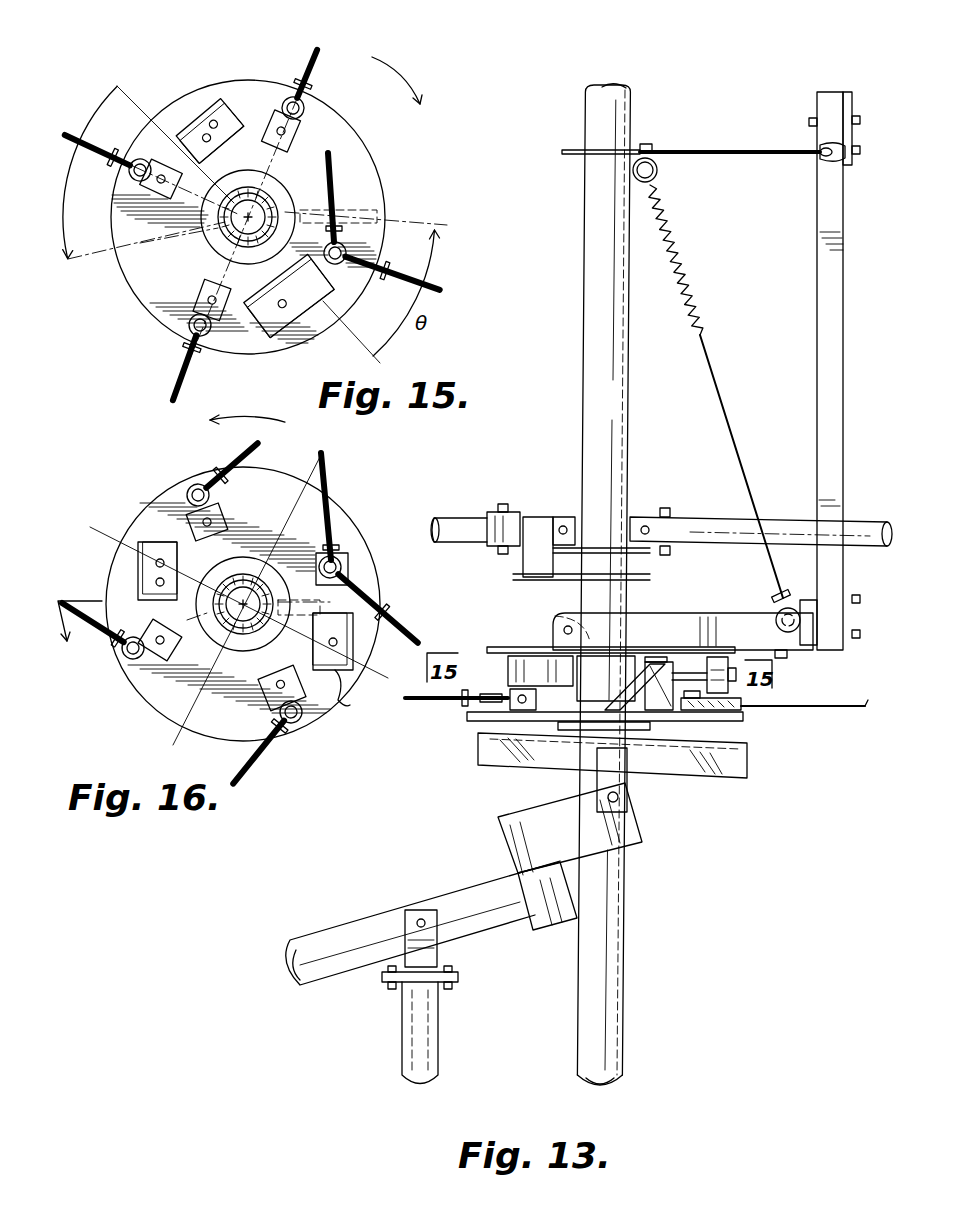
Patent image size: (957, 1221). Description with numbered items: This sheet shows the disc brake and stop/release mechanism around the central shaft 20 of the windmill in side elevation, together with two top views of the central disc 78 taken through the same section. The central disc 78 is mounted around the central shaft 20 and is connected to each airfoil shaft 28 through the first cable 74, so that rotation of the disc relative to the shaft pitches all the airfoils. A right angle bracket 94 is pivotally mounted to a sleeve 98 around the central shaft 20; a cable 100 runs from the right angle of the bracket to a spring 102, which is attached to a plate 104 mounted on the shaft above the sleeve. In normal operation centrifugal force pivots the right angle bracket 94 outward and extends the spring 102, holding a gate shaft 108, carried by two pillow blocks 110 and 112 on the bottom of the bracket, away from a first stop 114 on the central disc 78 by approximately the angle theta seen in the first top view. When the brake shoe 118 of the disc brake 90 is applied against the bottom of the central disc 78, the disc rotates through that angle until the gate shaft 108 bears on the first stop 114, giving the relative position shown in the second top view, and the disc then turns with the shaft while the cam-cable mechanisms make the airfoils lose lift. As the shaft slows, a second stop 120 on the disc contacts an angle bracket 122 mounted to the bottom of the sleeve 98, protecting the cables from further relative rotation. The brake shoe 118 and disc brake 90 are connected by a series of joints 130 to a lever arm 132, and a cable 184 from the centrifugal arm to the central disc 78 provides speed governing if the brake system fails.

In FIG. 15, the central shaft 20 is at (218, 237).
In FIG. 16, the central shaft 20 is at (243, 604).
In FIG. 13, the airfoil shaft 28 is at (455, 518).
In FIG. 15, the first cable 74 is at (312, 64).
In FIG. 16, the first cable 74 is at (250, 448).
In FIG. 13, the first cable 74 is at (435, 708).
In FIG. 15, the central disc 78 is at (355, 162).
In FIG. 16, the central disc 78 is at (352, 532).
In FIG. 13, the central disc 78 is at (740, 722).
In FIG. 13, the disc brake 90 is at (722, 780).
In FIG. 13, the right angle bracket 94 is at (842, 394).
In FIG. 13, the sleeve 98 is at (612, 605).
In FIG. 13, the cable 100 is at (732, 430).
In FIG. 13, the spring 102 is at (685, 266).
In FIG. 13, the plate 104 is at (646, 152).
In FIG. 13, the gate shaft 108 is at (682, 688).
In FIG. 13, the pillow block 110 is at (787, 607).
In FIG. 13, the pillow block 112 is at (662, 658).
In FIG. 15, the first stop 114 is at (293, 338).
In FIG. 16, the first stop 114 is at (340, 712).
In FIG. 13, the first stop 114 is at (672, 715).
In FIG. 13, the brake shoe 118 is at (740, 745).
In FIG. 15, the second stop 120 is at (200, 112).
In FIG. 16, the second stop 120 is at (136, 548).
In FIG. 15, the angle bracket 122 is at (140, 244).
In FIG. 13, the angle bracket 122 is at (520, 660).
In FIG. 13, the joints 130 is at (506, 805).
In FIG. 13, the lever arm 132 is at (356, 928).
In FIG. 15, the cable 184 is at (340, 192).
In FIG. 16, the cable 184 is at (334, 478).
In FIG. 13, the cable 184 is at (758, 706).